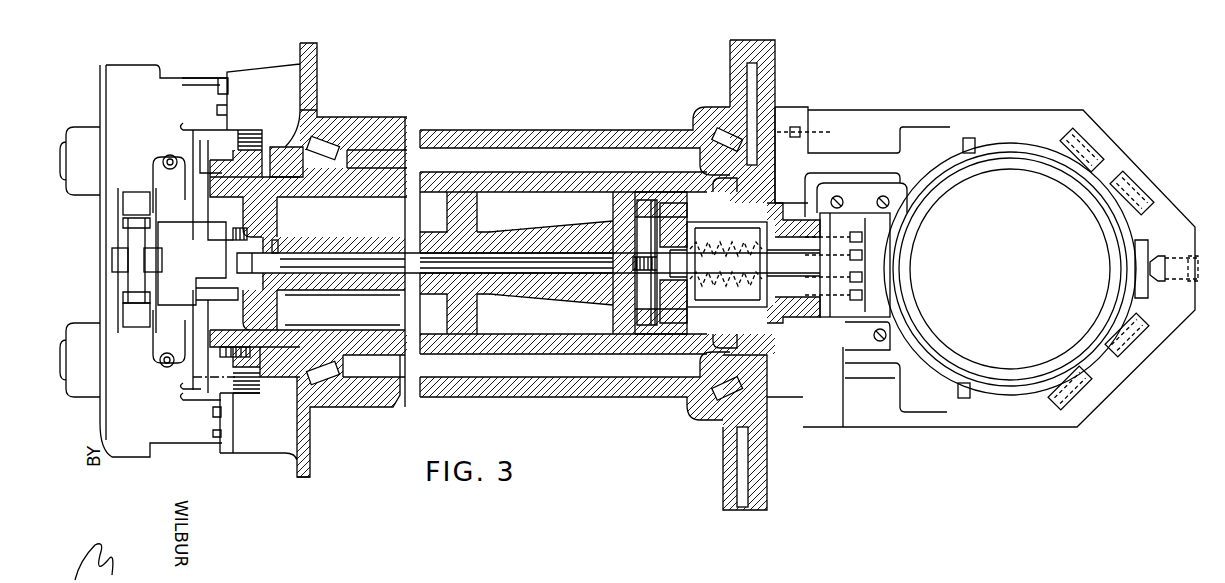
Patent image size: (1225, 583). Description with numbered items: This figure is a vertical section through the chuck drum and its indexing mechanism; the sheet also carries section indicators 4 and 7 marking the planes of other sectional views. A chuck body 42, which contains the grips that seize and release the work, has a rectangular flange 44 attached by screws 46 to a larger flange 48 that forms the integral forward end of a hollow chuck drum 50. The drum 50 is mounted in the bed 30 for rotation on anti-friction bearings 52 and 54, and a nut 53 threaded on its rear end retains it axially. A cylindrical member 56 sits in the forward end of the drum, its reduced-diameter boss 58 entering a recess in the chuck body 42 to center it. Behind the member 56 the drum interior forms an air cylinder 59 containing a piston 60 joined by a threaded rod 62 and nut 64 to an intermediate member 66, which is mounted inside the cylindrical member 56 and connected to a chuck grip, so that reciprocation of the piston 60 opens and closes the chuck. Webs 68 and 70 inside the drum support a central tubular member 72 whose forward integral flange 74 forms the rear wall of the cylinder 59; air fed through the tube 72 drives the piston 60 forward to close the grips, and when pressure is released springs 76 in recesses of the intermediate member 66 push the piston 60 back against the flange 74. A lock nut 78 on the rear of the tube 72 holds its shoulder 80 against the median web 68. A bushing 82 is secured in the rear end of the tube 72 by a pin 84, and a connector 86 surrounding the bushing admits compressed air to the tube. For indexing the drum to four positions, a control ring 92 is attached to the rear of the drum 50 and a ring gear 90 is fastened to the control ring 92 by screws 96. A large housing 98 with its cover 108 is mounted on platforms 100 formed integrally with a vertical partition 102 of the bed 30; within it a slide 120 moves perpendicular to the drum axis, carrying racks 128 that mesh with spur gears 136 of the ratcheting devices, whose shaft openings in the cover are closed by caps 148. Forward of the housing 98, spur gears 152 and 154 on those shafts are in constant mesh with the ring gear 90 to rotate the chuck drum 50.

The section line 4- 4 is at (55, 470).
The section line 7- 7 is at (248, 513).
The bed 30 is at (513, 130).
The chuck body 42 is at (1022, 116).
The rectangular flange 44 is at (793, 110).
The screws 46 is at (810, 133).
The flange 48 is at (760, 437).
The chuck drum 50 is at (580, 172).
The anti-friction bearing 52 is at (717, 108).
The nut 53 is at (285, 148).
The anti-friction bearing 54 is at (333, 143).
The cylindrical member 56 is at (697, 187).
The reduced-diameter boss 58 is at (817, 257).
The air cylinder 59 is at (640, 197).
The piston 60 is at (700, 320).
The threaded rod 62 is at (645, 334).
The nut 64 is at (632, 233).
The intermediate member 66 is at (665, 332).
The web 68 is at (478, 211).
The web 70 is at (262, 212).
The tubular member 72 is at (392, 236).
The flange 74 is at (612, 318).
The springs 76 is at (755, 258).
The lock nut 78 is at (243, 233).
The shoulder 80 is at (490, 232).
The bushing 82 is at (275, 288).
The pin 84 is at (278, 240).
The connector 86 is at (213, 271).
The ring gear 90 is at (267, 370).
The control ring 92 is at (215, 297).
The screws 96 is at (227, 347).
The housing 98 is at (138, 78).
The platforms 100 is at (283, 432).
The vertical partition 102 is at (310, 470).
The cover 108 is at (110, 93).
The slide 120 is at (122, 246).
The rack 128 is at (130, 310).
The spur gears 136 is at (137, 333).
The caps 148 is at (72, 333).
The spur gear 152 is at (252, 130).
The spur gear 154 is at (225, 395).